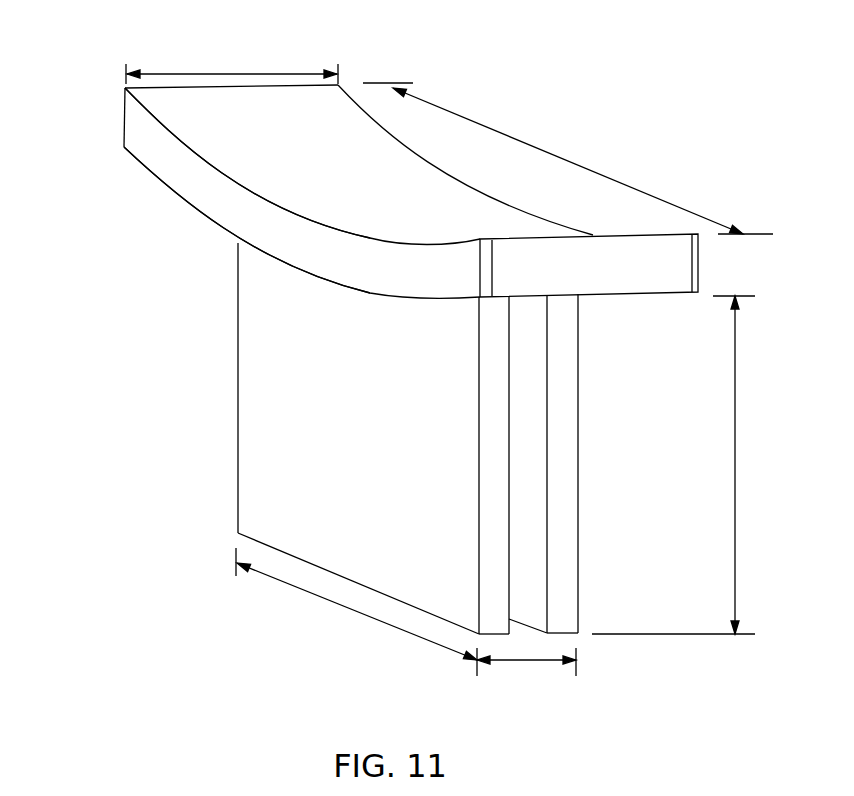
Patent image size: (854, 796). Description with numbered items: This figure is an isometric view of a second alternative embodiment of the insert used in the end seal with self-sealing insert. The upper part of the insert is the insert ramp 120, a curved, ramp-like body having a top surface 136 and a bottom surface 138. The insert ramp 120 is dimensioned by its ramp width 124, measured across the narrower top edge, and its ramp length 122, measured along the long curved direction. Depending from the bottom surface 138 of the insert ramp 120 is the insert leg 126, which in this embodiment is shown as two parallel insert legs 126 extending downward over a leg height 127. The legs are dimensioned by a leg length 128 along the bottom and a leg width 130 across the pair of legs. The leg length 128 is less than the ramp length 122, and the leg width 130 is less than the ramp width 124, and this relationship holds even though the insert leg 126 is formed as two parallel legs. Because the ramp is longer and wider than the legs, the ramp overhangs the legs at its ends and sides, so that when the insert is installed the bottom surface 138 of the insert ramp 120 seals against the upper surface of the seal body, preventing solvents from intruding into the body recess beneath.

The insert ramp 120 is at (425, 192).
The ramp length 122 is at (570, 158).
The ramp width 124 is at (232, 74).
The insert leg 126 is at (557, 553).
The leg height 127 is at (738, 462).
The leg length 128 is at (355, 612).
The leg width 130 is at (525, 660).
The top surface 136 is at (177, 118).
The bottom surface 138 is at (173, 195).